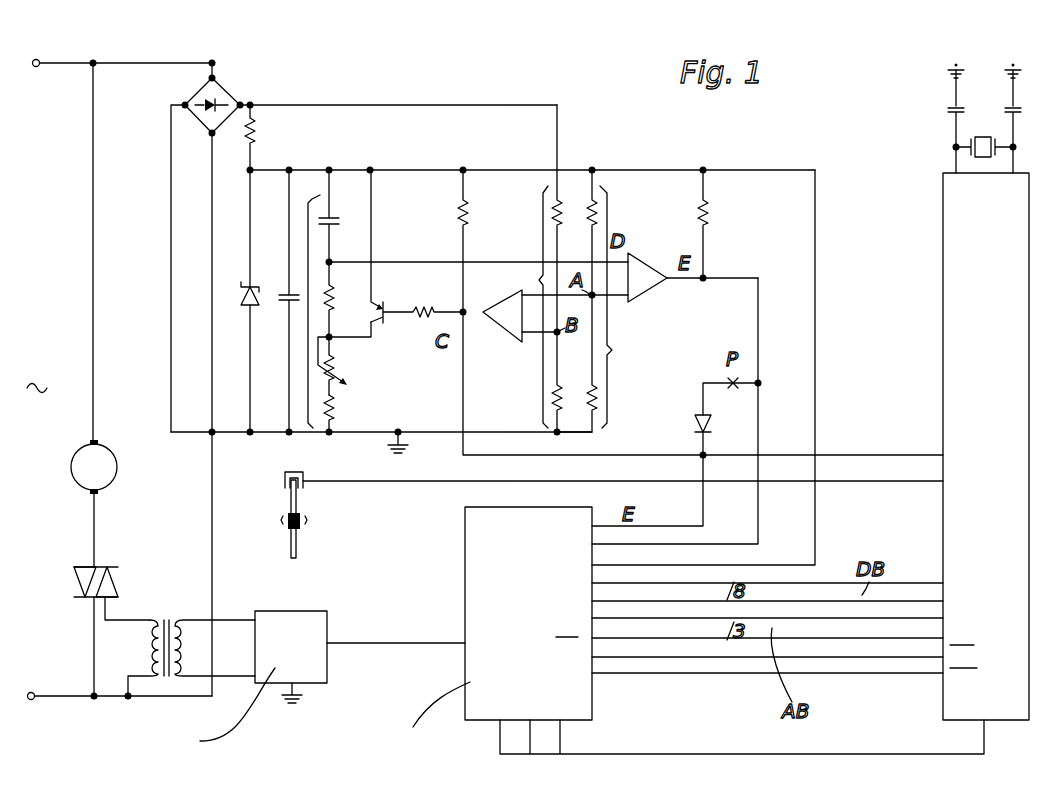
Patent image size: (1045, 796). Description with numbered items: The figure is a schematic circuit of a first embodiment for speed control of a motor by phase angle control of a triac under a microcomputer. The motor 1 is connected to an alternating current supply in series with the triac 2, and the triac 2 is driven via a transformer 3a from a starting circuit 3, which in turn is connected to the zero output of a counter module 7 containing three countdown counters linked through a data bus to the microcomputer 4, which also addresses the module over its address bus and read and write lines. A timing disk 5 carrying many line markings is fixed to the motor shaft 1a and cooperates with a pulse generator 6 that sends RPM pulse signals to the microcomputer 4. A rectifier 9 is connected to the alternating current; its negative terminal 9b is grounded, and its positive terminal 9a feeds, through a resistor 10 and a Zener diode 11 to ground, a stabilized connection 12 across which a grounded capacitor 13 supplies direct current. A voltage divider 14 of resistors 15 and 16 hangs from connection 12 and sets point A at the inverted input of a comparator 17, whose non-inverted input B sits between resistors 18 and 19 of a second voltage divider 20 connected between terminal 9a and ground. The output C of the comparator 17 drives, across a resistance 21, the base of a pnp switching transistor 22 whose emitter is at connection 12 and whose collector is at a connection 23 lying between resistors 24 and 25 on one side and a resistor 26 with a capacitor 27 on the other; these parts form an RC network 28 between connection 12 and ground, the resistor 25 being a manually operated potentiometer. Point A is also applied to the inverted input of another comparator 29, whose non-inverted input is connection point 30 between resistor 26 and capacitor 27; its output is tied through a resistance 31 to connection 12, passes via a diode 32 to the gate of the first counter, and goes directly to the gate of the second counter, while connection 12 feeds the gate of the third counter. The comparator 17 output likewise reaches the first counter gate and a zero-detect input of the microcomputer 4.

The motor 1 is at (108, 474).
The motor shaft 1a is at (307, 521).
The triac 2 is at (75, 576).
The starting circuit 3 is at (290, 620).
The transformer 3a is at (160, 619).
The microcomputer 4 is at (940, 508).
The timing disk 5 is at (300, 549).
The pulse generator 6 is at (300, 473).
The counter module 7 is at (465, 560).
The rectifier 9 is at (225, 87).
The positive terminal 9a is at (253, 104).
The negative terminal 9b is at (184, 103).
The resistor 10 is at (255, 134).
The Zener diode 11 is at (247, 309).
The connection 12 is at (253, 170).
The capacitor 13 is at (287, 295).
The voltage divider 14 is at (592, 307).
The resistor 15 is at (590, 206).
The resistor 16 is at (590, 388).
The comparator 17 is at (491, 314).
The resistor 18 is at (559, 228).
The resistor 19 is at (560, 406).
The voltage divider 20 is at (525, 276).
The resistance 21 is at (422, 309).
The pnp switching transistor 22 is at (384, 319).
The connection 23 is at (333, 338).
The resistor 24 is at (336, 410).
The resistor 25 is at (336, 368).
The resistor 26 is at (335, 302).
The capacitor 27 is at (332, 216).
The RC network 28 is at (306, 322).
The comparator 29 is at (655, 290).
The connection point 30 is at (332, 260).
The resistance 31 is at (708, 217).
The diode 32 is at (695, 421).